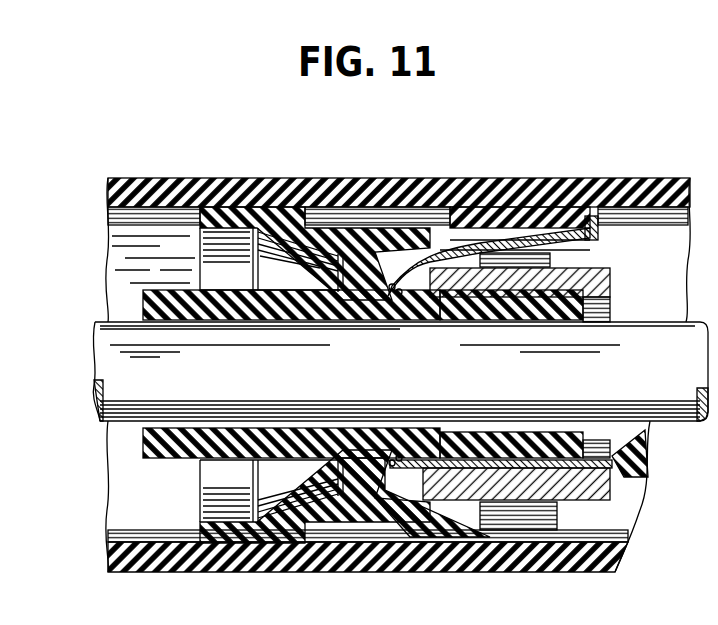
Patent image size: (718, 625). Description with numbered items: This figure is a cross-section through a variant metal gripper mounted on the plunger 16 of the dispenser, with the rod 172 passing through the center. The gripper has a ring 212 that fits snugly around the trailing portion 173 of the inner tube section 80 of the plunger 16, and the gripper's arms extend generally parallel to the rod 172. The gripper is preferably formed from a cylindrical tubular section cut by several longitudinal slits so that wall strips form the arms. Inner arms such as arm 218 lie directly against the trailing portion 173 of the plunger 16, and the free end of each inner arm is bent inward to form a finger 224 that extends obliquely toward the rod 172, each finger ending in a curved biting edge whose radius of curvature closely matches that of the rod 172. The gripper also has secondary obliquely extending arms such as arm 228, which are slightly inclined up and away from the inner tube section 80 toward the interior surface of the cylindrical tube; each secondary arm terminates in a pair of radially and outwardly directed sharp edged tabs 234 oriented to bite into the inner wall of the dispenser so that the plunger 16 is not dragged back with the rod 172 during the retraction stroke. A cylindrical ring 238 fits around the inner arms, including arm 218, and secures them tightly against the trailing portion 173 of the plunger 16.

The plunger 16 is at (378, 240).
The secondary obliquely extending arm 228 is at (466, 250).
The sharp edged tabs 234 is at (597, 229).
The cylindrical ring 238 is at (614, 281).
The ring 212 is at (388, 300).
The inner tube section 80 is at (496, 447).
The trailing portion 173 is at (553, 447).
The arm 218 is at (563, 446).
The finger 224 is at (631, 433).
The rod 172 is at (90, 420).